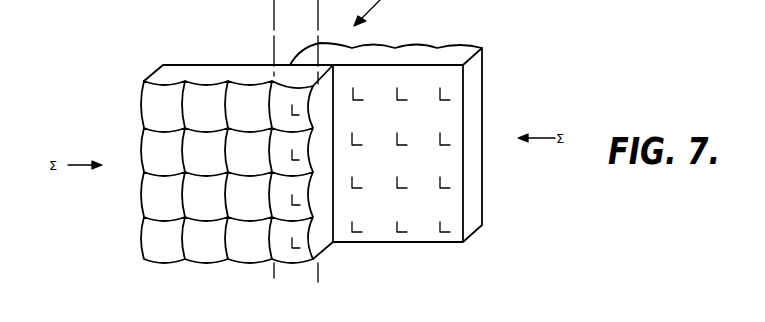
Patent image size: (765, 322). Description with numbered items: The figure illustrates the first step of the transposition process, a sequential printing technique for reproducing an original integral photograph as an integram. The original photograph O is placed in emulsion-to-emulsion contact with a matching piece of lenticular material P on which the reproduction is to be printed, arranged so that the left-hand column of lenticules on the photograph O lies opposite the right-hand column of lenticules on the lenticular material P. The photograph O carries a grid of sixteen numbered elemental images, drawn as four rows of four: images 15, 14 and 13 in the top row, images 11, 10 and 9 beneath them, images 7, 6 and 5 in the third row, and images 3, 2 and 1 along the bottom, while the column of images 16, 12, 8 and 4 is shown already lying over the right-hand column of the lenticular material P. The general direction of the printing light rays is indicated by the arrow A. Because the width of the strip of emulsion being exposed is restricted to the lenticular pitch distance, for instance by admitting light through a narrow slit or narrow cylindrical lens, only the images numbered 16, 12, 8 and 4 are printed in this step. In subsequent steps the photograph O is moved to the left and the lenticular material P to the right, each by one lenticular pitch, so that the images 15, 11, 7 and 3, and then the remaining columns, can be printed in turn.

The image 1 is at (439, 233).
The image 2 is at (395, 233).
The image 3 is at (351, 233).
The image 4 is at (289, 249).
The image 5 is at (437, 191).
The image 6 is at (395, 191).
The image 7 is at (350, 191).
The image 8 is at (289, 206).
The image 9 is at (437, 147).
The image 10 is at (393, 147).
The image 11 is at (351, 147).
The image 12 is at (288, 162).
The image 13 is at (435, 101).
The image 14 is at (393, 101).
The image 15 is at (351, 101).
The image 16 is at (288, 116).
The lenticular material P is at (165, 75).
The original photograph O is at (458, 52).
The arrow A is at (370, 2).